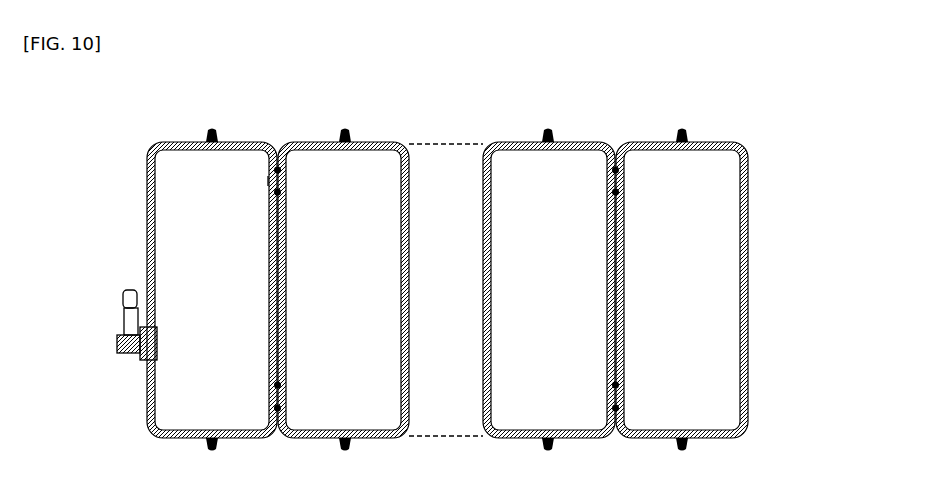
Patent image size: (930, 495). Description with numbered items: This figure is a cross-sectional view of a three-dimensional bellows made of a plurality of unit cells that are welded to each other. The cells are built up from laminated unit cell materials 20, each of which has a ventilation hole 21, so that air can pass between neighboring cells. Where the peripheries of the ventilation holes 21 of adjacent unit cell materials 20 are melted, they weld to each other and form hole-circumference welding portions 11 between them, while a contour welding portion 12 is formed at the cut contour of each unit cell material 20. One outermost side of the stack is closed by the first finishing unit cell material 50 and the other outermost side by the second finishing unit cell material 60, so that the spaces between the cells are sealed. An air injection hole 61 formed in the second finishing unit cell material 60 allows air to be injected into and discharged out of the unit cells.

The hole-circumference welding portion 11 is at (277, 168).
The contour welding portion 12 is at (212, 130).
The unit cell material 20 is at (255, 437).
The ventilation hole 21 is at (268, 181).
The first finishing unit cell material 50 is at (435, 288).
The second finishing unit cell material 60 is at (147, 381).
The air injection hole 61 is at (122, 312).